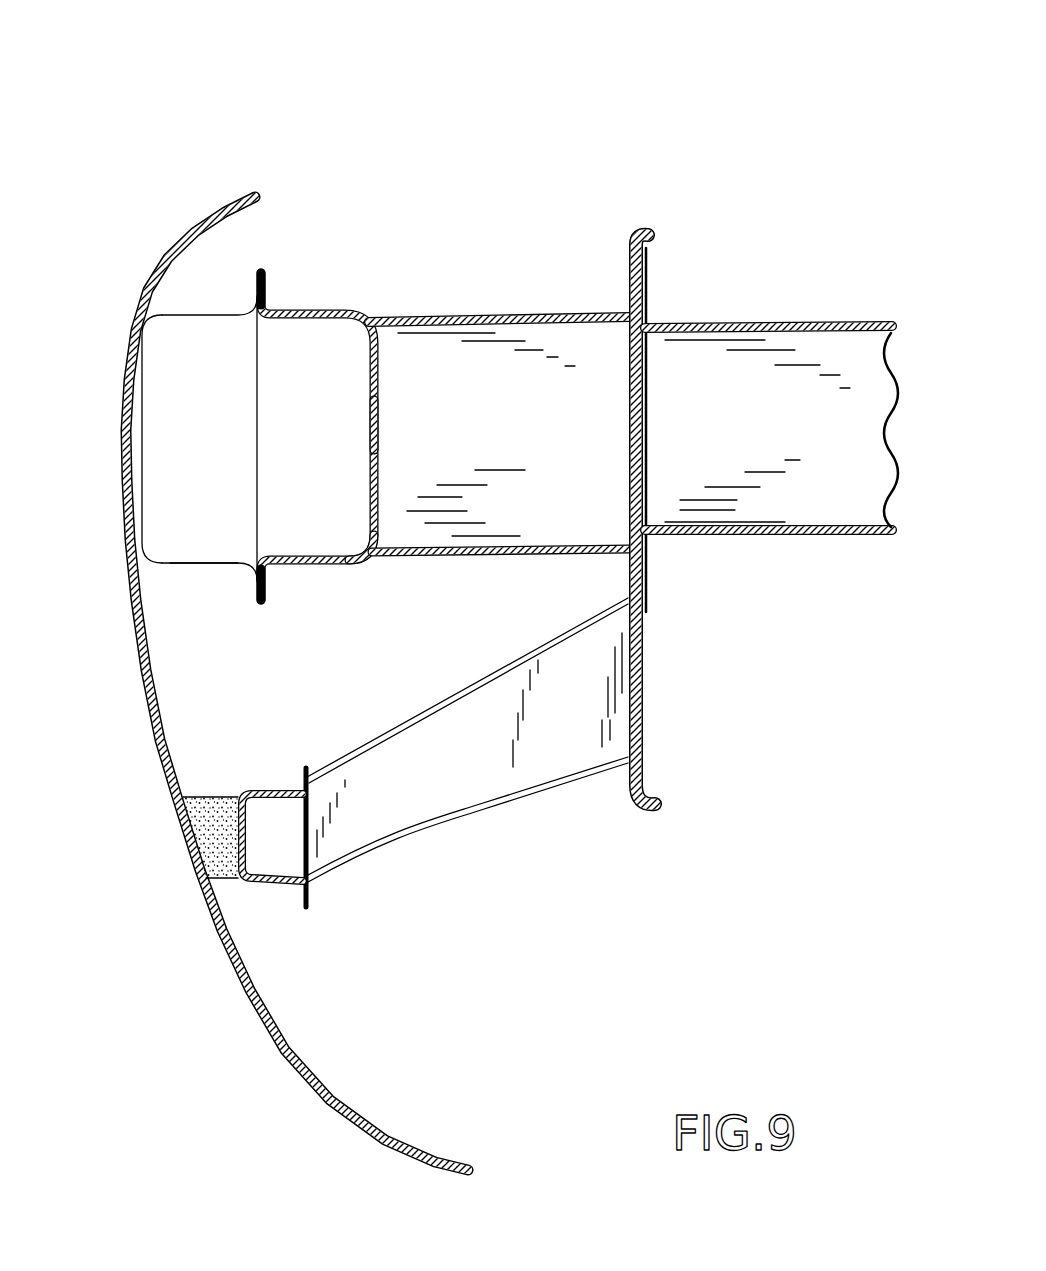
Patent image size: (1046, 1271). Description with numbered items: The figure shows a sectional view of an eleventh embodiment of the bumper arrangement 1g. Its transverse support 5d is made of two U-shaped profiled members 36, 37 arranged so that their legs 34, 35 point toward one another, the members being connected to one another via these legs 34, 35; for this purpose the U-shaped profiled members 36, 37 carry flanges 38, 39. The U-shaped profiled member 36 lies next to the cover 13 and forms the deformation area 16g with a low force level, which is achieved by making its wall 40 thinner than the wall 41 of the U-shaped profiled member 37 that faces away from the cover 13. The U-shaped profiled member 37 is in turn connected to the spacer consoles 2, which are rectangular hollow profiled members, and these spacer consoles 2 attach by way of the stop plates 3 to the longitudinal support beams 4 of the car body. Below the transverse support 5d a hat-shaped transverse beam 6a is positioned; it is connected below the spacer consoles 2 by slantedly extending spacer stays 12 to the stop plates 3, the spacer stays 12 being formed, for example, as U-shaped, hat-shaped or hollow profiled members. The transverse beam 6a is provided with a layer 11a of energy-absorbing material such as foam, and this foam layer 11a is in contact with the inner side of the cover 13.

The bumper arrangement 1g is at (276, 133).
The transverse support 5d is at (285, 252).
The spacer consoles 2 is at (514, 308).
The stop plates 3 is at (643, 436).
The longitudinal support beams 4 is at (790, 315).
The spacer stays 12 is at (493, 758).
The transverse beam 6a is at (287, 906).
The foam layer 11a is at (200, 833).
The cover 13 is at (130, 686).
The deformation area 16g is at (253, 479).
The legs 34 is at (208, 318).
The legs 35 is at (313, 320).
The U-shaped profiled member 36 is at (193, 574).
The U-shaped profiled member 37 is at (362, 578).
The flanges 38 is at (253, 288).
The flanges 39 is at (267, 292).
The wall 40 is at (139, 429).
The wall 41 is at (378, 424).